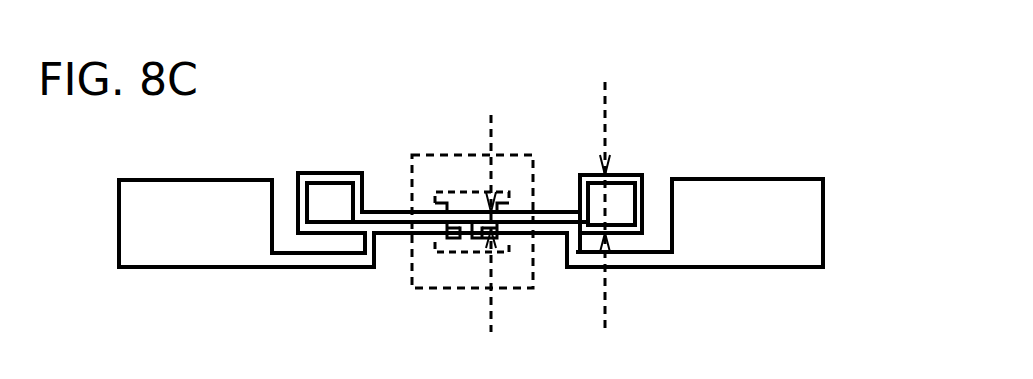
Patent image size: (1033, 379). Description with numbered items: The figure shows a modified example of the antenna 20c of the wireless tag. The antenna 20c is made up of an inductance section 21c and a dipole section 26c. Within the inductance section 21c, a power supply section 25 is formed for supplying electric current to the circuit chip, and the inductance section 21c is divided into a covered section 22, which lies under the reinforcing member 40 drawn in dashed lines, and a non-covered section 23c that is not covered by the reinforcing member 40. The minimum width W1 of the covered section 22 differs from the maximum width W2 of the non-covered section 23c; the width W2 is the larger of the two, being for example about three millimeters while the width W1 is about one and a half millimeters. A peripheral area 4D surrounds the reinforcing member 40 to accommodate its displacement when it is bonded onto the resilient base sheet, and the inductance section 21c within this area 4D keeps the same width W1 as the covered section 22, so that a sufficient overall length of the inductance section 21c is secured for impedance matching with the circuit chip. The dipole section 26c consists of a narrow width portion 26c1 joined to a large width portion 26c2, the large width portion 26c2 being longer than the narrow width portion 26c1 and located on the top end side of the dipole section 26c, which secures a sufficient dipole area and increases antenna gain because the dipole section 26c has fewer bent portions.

The antenna 20c is at (715, 128).
The inductance section 21c is at (582, 175).
The non-covered section 23c is at (630, 178).
The dipole section 26c is at (735, 268).
The narrow width portion 26c1 is at (657, 258).
The large width portion 26c2 is at (787, 190).
The peripheral area 4D is at (412, 173).
The reinforcing member 40 is at (413, 257).
The covered section 22 is at (445, 242).
The power supply section 25 is at (478, 242).
The minimum width of covered section W1 is at (471, 218).
The maximum width of non-covered section W2 is at (583, 201).